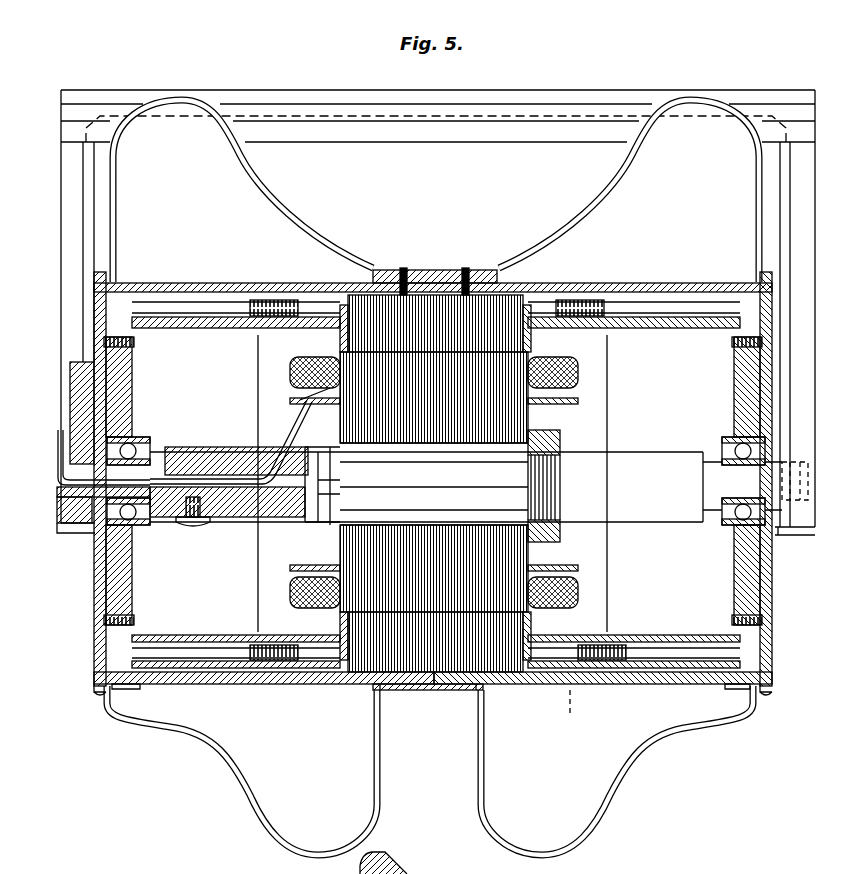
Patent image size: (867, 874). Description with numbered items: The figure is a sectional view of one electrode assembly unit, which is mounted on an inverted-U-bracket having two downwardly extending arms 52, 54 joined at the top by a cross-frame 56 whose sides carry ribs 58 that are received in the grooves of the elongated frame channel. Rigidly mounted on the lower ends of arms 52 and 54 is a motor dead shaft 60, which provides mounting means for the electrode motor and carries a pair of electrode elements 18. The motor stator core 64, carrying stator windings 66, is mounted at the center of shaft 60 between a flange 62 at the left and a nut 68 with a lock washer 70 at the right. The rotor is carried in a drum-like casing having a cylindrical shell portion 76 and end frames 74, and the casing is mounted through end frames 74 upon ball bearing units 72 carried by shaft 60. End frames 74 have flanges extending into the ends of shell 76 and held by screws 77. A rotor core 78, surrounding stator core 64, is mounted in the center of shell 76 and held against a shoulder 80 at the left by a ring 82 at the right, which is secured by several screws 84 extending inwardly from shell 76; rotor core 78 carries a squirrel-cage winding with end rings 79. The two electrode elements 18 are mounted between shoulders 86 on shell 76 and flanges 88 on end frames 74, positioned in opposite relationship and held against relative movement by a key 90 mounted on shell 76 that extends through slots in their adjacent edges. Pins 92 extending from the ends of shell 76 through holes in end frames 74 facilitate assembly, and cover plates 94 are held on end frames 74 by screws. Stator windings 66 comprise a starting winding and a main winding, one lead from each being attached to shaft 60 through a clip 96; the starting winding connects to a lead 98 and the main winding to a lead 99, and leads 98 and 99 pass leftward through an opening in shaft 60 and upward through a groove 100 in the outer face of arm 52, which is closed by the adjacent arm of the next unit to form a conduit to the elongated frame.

The electrode elements 18 is at (262, 200).
The arm 52 is at (68, 193).
The arm 54 is at (802, 195).
The cross-frame 56 is at (300, 90).
The ribs 58 is at (542, 116).
The motor dead shaft 60 is at (654, 490).
The flange 62 is at (320, 518).
The stator core 64 is at (448, 420).
The stator windings 66 is at (288, 369).
The nut 68 is at (562, 441).
The lock washer 70 is at (538, 432).
The ball bearing units 72 is at (140, 440).
The end frames 74 is at (132, 575).
The cylindrical shell portion 76 is at (441, 690).
The screws 77 is at (200, 310).
The rotor core 78 is at (385, 650).
The end rings 79 is at (340, 628).
The shoulder 80 is at (330, 684).
The ring 82 is at (533, 684).
The screws 84 is at (568, 712).
The shoulders 86 is at (384, 691).
The flanges 88 is at (93, 690).
The key 90 is at (438, 270).
The pins 92 is at (125, 688).
The cover plates 94 is at (96, 587).
The clip 96 is at (222, 524).
The lead 98 is at (296, 432).
The lead 99 is at (290, 428).
The groove 100 is at (58, 432).